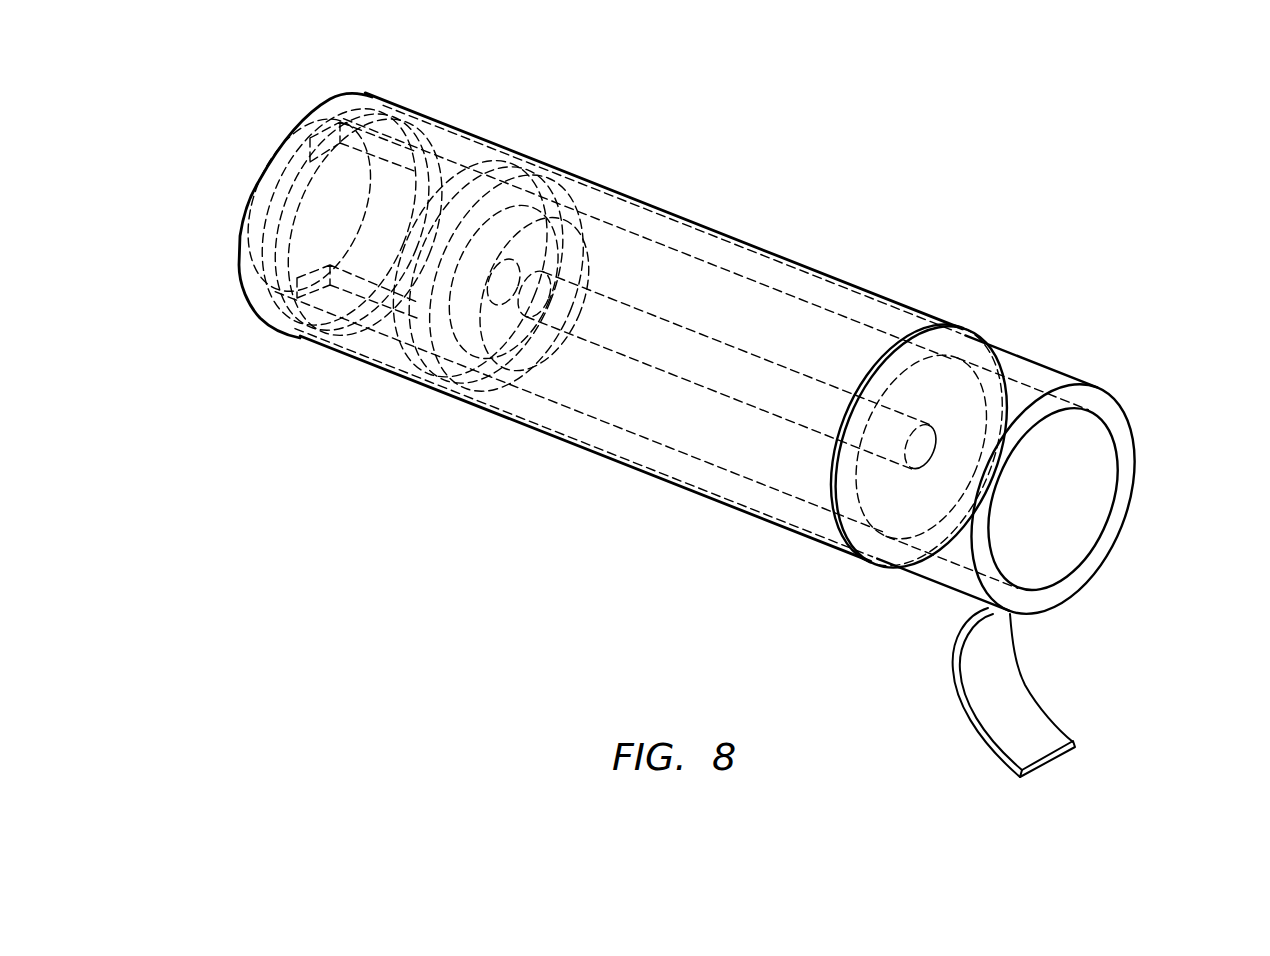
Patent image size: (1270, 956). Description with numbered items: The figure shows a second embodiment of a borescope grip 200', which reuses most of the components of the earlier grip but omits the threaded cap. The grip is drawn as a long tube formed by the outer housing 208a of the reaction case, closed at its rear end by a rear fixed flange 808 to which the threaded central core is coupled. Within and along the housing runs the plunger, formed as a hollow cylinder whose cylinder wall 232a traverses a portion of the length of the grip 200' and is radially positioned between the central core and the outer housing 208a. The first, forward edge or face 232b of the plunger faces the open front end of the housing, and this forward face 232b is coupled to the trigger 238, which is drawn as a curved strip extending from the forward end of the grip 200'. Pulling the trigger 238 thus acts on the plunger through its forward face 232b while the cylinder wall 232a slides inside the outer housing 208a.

The borescope grip 200' is at (1025, 141).
The outer housing 208a is at (784, 258).
The cylinder wall 232a is at (1015, 356).
The forward edge/face 232b is at (1110, 411).
The trigger 238 is at (1010, 687).
The rear fixed flange 808 is at (262, 239).